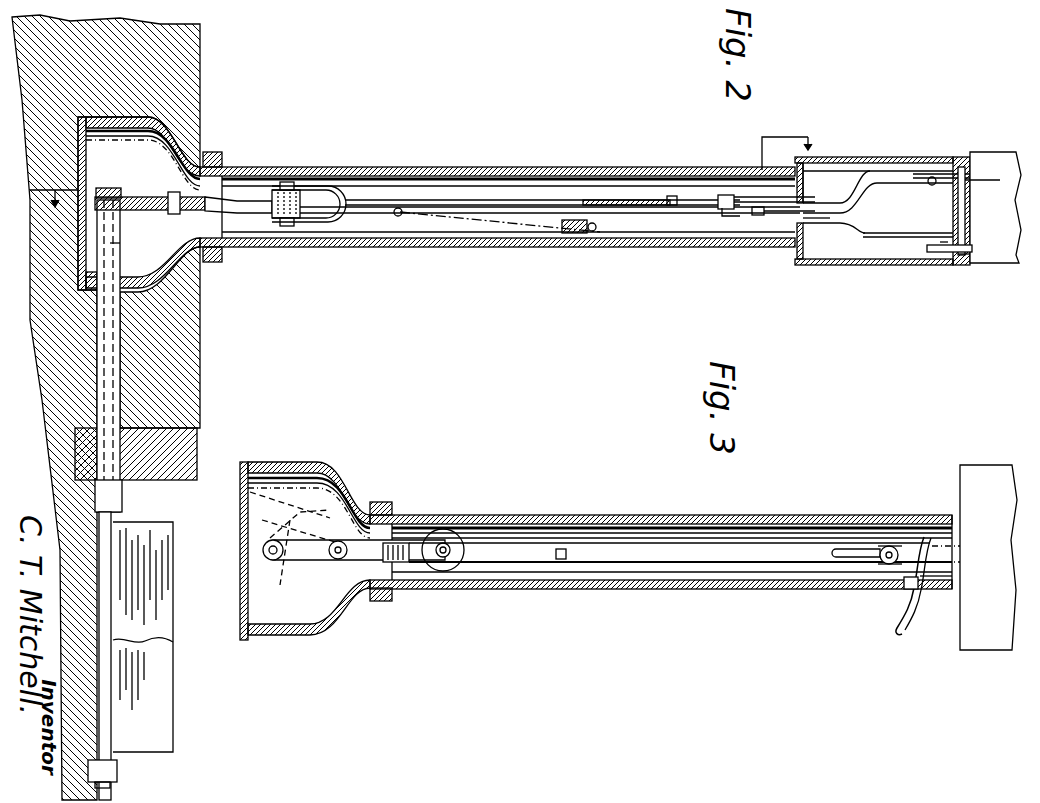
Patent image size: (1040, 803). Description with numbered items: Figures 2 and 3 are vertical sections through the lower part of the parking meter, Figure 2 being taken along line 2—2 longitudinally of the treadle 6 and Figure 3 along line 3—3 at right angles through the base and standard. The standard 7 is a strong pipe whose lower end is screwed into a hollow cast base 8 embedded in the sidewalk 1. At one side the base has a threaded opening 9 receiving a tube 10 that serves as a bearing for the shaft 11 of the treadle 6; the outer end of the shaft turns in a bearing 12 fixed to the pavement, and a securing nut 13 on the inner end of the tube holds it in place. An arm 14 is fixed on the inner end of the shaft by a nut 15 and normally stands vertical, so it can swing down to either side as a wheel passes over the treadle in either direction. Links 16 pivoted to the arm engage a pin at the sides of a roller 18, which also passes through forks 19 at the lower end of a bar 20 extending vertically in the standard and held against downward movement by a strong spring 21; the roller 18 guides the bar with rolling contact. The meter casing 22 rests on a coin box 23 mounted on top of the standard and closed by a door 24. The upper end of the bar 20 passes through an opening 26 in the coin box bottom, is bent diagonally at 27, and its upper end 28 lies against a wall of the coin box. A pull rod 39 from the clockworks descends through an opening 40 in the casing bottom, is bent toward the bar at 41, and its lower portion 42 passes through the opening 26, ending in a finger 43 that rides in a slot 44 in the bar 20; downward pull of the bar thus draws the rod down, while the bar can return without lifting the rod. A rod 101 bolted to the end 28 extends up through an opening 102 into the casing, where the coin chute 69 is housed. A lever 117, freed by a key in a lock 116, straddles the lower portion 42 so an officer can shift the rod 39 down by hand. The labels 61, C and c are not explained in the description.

In FIG. 2, the wall 1 is at (185, 350).
In FIG. 2, the section line 2— 2 is at (192, 452).
In FIG. 2, the section line 3— 3 is at (426, 168).
In FIG. 3, the section line 3— 3 is at (953, 508).
In FIG. 2, the treadle 6 is at (152, 688).
In FIG. 2, the standard 7 is at (620, 170).
In FIG. 3, the standard 7 is at (661, 552).
In FIG. 2, the base 8 is at (207, 152).
In FIG. 3, the base 8 is at (318, 474).
In FIG. 2, the threaded opening 9 is at (84, 283).
In FIG. 2, the tube 10 is at (106, 380).
In FIG. 2, the shank or shaft 11 is at (112, 243).
In FIG. 3, the shank or shaft 11 is at (266, 562).
In FIG. 2, the bearing 12 is at (118, 772).
In FIG. 2, the securing nut 13 is at (130, 266).
In FIG. 2, the arm 14 is at (152, 200).
In FIG. 3, the arm 14 is at (304, 558).
In FIG. 2, the nut 15 is at (108, 190).
In FIG. 3, the nut 15 is at (276, 562).
In FIG. 2, the links 16 is at (222, 195).
In FIG. 3, the links 16 is at (346, 490).
In FIG. 2, the roller 18 is at (296, 200).
In FIG. 3, the roller 18 is at (442, 568).
In FIG. 2, the forks 19 is at (314, 198).
In FIG. 3, the forks 19 is at (486, 562).
In FIG. 2, the bar 20 is at (640, 214).
In FIG. 3, the bar 20 is at (698, 556).
In FIG. 2, the spring 21 is at (512, 225).
In FIG. 2, the box or casing 22 is at (1006, 160).
In FIG. 2, the coin box 23 is at (878, 158).
In FIG. 3, the coin box 23 is at (982, 640).
In FIG. 2, the door 24 is at (818, 232).
In FIG. 2, the opening 26 is at (812, 195).
In FIG. 2, the diagonally bent portion 27 is at (882, 184).
In FIG. 2, the upper end of bar 28 is at (916, 172).
In FIG. 2, the pull rod 39 is at (876, 239).
In FIG. 2, the opening 40 is at (972, 244).
In FIG. 2, the bent portion 41 is at (850, 235).
In FIG. 2, the lower portion of rod 42 is at (808, 226).
In FIG. 3, the lower portion of rod 42 is at (930, 518).
In FIG. 2, the side extension or finger 43 is at (712, 212).
In FIG. 3, the side extension or finger 43 is at (881, 549).
In FIG. 2, the slot 44 is at (690, 200).
In FIG. 3, the slot 44 is at (846, 558).
In FIG. 2, the pin 61 is at (940, 184).
In FIG. 2, the coin chute 69 is at (962, 254).
In FIG. 2, the rod 101 is at (976, 182).
In FIG. 2, the opening 102 is at (972, 160).
In FIG. 2, the lock 116 is at (772, 222).
In FIG. 3, the lock 116 is at (926, 592).
In FIG. 2, the lever 117 is at (758, 215).
In FIG. 3, the lever 117 is at (952, 572).
In FIG. 2, the chamber C is at (904, 262).
In FIG. 2, the passage c is at (942, 246).